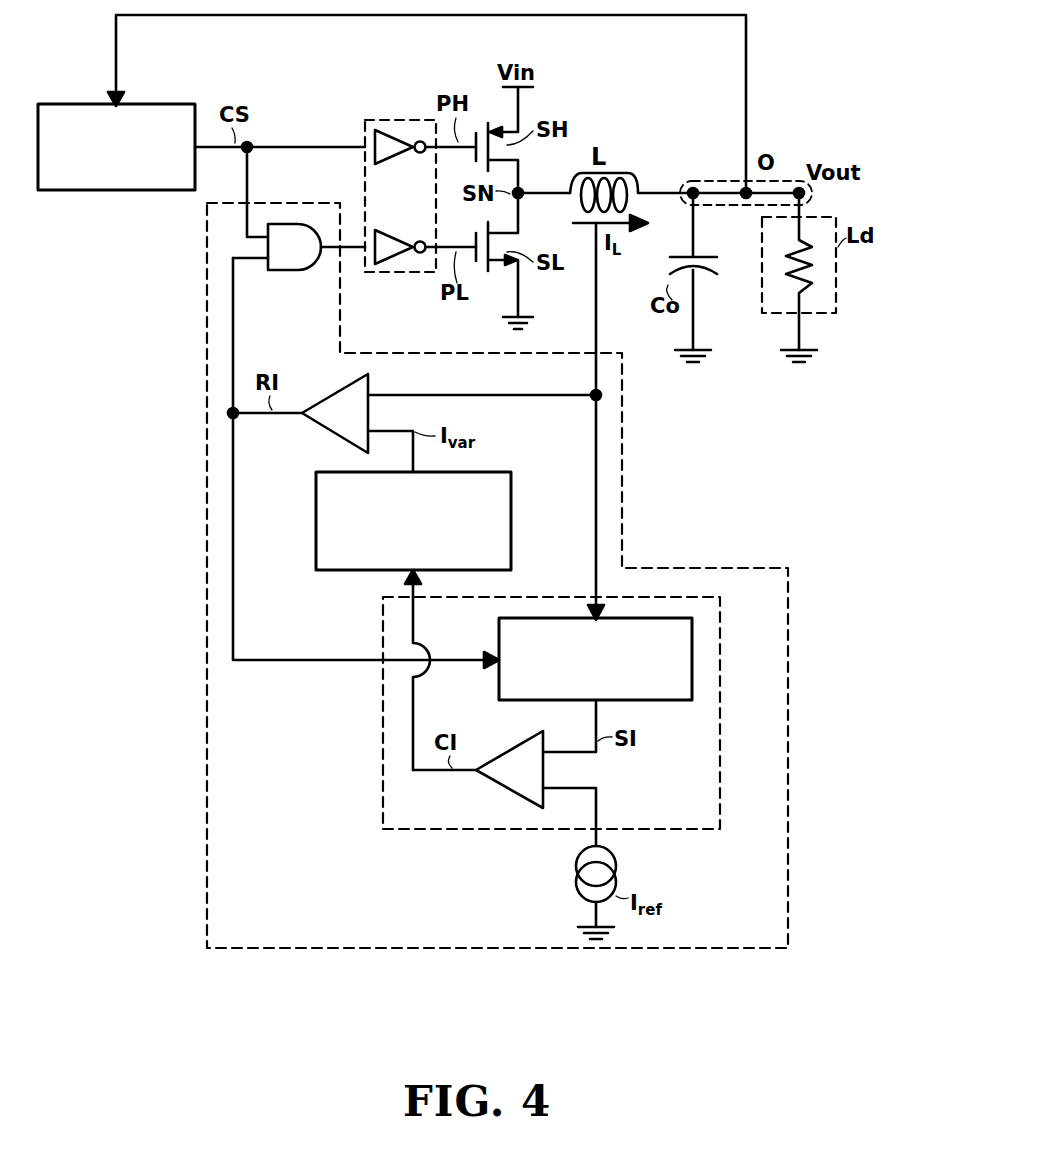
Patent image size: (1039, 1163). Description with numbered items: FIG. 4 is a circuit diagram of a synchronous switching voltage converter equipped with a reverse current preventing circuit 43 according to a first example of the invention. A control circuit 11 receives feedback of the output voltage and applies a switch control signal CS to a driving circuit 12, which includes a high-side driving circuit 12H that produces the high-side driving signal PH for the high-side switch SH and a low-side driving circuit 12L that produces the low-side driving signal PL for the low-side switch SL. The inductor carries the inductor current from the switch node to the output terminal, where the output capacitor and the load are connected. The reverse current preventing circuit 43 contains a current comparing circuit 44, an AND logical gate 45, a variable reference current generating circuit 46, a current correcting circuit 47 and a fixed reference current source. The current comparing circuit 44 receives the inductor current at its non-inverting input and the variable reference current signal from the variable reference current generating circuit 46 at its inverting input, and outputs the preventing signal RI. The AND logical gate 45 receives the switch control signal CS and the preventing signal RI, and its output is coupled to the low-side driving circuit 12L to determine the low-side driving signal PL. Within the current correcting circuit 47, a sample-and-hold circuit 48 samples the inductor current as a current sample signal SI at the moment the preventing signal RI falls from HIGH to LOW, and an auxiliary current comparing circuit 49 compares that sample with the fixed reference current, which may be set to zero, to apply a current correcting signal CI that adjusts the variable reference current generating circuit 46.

The control circuit 11 is at (90, 194).
The driving circuit 12 is at (420, 174).
The high-side driving circuit 12H is at (424, 160).
The low-side driving circuit 12L is at (425, 236).
The reverse current preventing circuit 43 is at (790, 710).
The current comparing circuit 44 is at (300, 433).
The AND logical gate 45 is at (286, 273).
The variable reference current generating circuit 46 is at (513, 519).
The current correcting circuit 47 is at (722, 668).
The sample-and-hold circuit 48 is at (672, 702).
The auxiliary current comparing circuit 49 is at (498, 792).